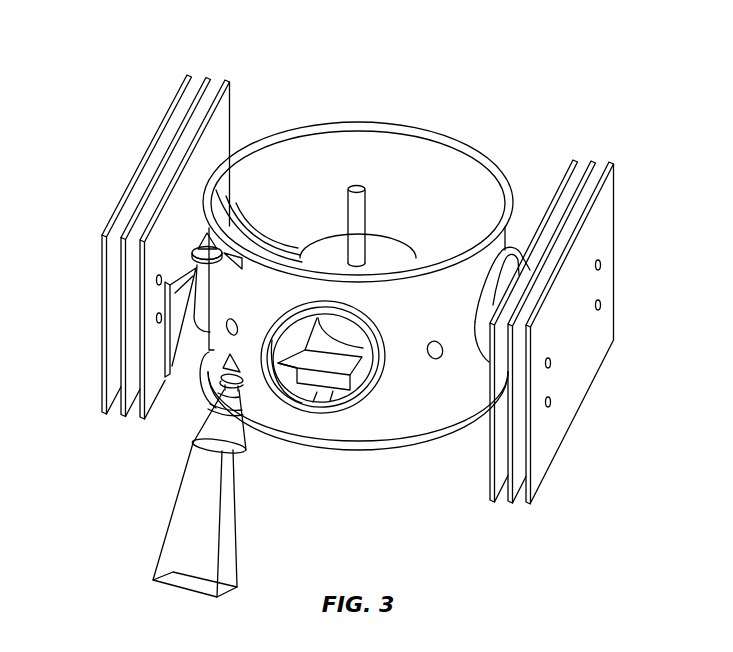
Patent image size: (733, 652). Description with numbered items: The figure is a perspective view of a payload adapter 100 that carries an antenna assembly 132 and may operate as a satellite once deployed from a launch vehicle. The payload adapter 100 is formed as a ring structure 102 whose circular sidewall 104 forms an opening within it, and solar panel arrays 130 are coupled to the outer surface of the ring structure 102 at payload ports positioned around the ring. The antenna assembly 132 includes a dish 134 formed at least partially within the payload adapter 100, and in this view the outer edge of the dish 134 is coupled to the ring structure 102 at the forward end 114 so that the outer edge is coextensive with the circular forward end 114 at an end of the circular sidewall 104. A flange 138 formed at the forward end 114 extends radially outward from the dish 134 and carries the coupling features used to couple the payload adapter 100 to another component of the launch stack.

The payload adapter 100 is at (476, 94).
The ring structure 102 is at (388, 403).
The circular sidewall 104 is at (233, 293).
The forward end 114 is at (207, 210).
The solar panel arrays 130 is at (145, 155).
The antenna assembly 132 is at (297, 116).
The dish 134 is at (243, 167).
The flange 138 is at (500, 163).